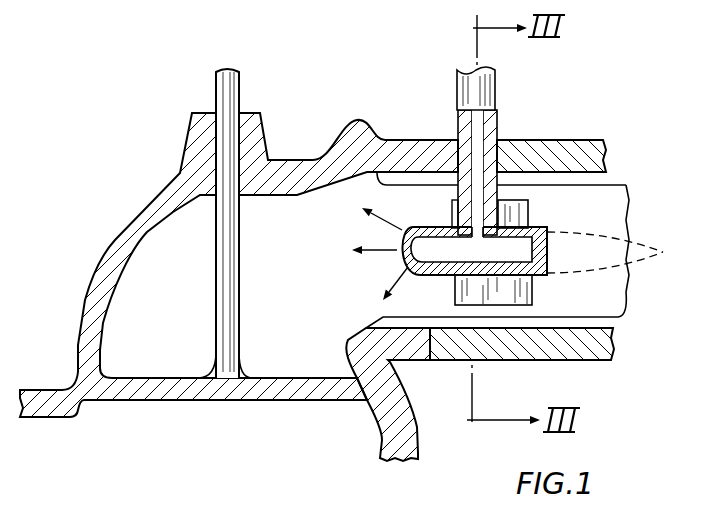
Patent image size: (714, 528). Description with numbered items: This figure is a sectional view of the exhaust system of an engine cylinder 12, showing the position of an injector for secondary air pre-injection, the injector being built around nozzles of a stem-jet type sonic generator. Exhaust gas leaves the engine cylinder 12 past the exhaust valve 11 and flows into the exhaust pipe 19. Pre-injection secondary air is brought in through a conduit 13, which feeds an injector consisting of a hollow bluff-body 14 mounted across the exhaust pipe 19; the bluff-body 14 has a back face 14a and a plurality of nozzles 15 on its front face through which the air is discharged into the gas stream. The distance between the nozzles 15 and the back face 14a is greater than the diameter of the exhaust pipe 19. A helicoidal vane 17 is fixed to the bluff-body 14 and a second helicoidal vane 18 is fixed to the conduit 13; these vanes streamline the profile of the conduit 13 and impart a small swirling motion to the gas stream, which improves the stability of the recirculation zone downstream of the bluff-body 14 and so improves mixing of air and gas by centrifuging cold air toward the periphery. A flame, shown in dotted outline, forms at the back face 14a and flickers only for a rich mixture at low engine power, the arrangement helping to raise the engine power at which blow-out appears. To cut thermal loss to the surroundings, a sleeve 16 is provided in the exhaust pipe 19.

The exhaust valve 11 is at (227, 97).
The engine cylinder 12 is at (406, 443).
The conduit 13 is at (482, 90).
The hollow bluff-body 14 is at (440, 280).
The back face 14a is at (547, 244).
The nozzles 15 is at (407, 268).
The sleeve 16 is at (628, 290).
The helicoidal vane 17 is at (530, 288).
The helicoidal vane 18 is at (520, 213).
The exhaust pipe 19 is at (565, 348).